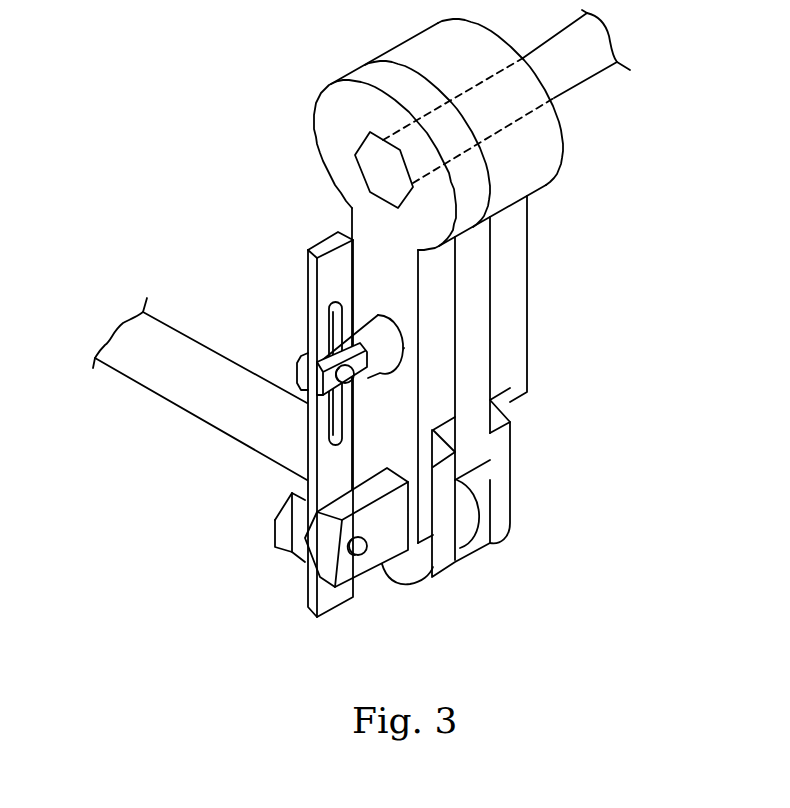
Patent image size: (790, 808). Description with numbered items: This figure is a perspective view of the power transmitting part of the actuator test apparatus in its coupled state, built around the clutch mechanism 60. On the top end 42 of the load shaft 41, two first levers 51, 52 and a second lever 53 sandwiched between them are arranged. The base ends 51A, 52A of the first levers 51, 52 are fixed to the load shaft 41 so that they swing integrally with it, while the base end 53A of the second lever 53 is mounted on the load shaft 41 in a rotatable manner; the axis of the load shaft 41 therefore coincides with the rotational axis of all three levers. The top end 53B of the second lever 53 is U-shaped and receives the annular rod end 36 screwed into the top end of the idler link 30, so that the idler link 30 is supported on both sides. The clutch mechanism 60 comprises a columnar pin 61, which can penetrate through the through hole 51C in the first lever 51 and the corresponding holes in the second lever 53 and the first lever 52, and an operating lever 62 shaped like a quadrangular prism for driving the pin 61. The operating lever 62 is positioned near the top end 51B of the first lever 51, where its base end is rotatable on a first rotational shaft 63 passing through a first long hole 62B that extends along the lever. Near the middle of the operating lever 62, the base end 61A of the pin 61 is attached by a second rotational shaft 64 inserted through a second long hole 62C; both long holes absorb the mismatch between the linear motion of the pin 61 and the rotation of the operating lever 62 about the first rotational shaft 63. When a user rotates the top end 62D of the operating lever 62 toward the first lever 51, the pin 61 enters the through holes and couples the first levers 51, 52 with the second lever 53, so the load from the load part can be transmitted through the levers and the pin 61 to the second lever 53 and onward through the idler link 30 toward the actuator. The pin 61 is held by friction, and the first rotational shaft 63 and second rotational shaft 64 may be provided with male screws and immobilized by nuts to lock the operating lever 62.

The idler link 30 is at (128, 377).
The rod end 36 is at (460, 549).
The load shaft 41 is at (582, 88).
The top end of the load shaft 42 is at (355, 173).
The first lever 51 is at (352, 225).
The base end of the first lever 51A is at (315, 134).
The top end of the first lever 51B is at (427, 548).
The through hole 51C is at (404, 360).
The first lever 52 is at (528, 259).
The base end of the first lever 52A is at (564, 157).
The second lever 53 is at (491, 319).
The base end of the second lever 53A is at (392, 54).
The top end of the second lever 53B is at (512, 463).
The clutch mechanism 60 is at (173, 125).
The pin 61 is at (365, 322).
The base end of the pin 61A is at (296, 368).
The operating lever 62 is at (308, 339).
The first long hole 62B is at (300, 512).
The second long hole 62C is at (329, 311).
The top end of the operating lever 62D is at (308, 269).
The first rotational shaft 63 is at (366, 560).
The second rotational shaft 64 is at (364, 380).